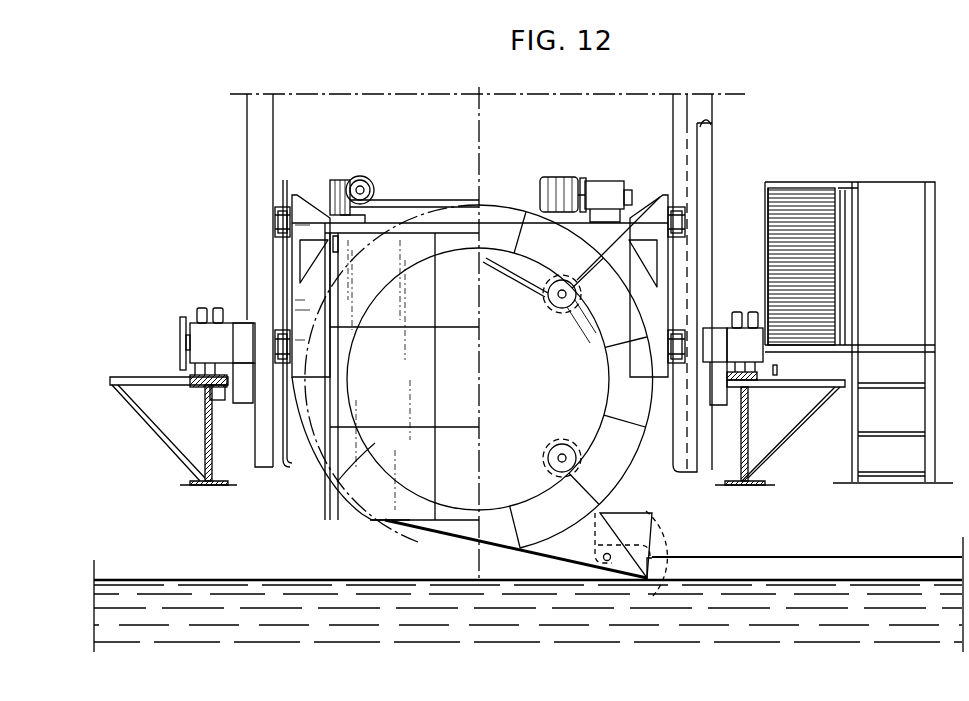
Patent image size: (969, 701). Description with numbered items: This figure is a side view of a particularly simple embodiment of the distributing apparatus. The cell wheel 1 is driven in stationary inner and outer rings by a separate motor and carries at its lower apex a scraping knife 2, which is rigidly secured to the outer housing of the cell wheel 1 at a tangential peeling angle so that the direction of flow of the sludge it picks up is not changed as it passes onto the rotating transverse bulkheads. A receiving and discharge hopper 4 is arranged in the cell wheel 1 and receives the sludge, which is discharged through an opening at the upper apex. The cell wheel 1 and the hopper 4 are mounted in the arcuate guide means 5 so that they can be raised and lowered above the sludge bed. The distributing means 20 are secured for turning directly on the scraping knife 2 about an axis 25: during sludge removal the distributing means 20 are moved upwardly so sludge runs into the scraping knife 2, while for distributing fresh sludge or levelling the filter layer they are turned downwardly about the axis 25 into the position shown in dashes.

The cell wheel 1 is at (363, 252).
The scraping knife 2 is at (520, 548).
The receiving and discharge hopper 4 is at (337, 482).
The arcuate guide means 5 is at (711, 124).
The distributing means 20 is at (630, 516).
The axis 25 is at (607, 561).